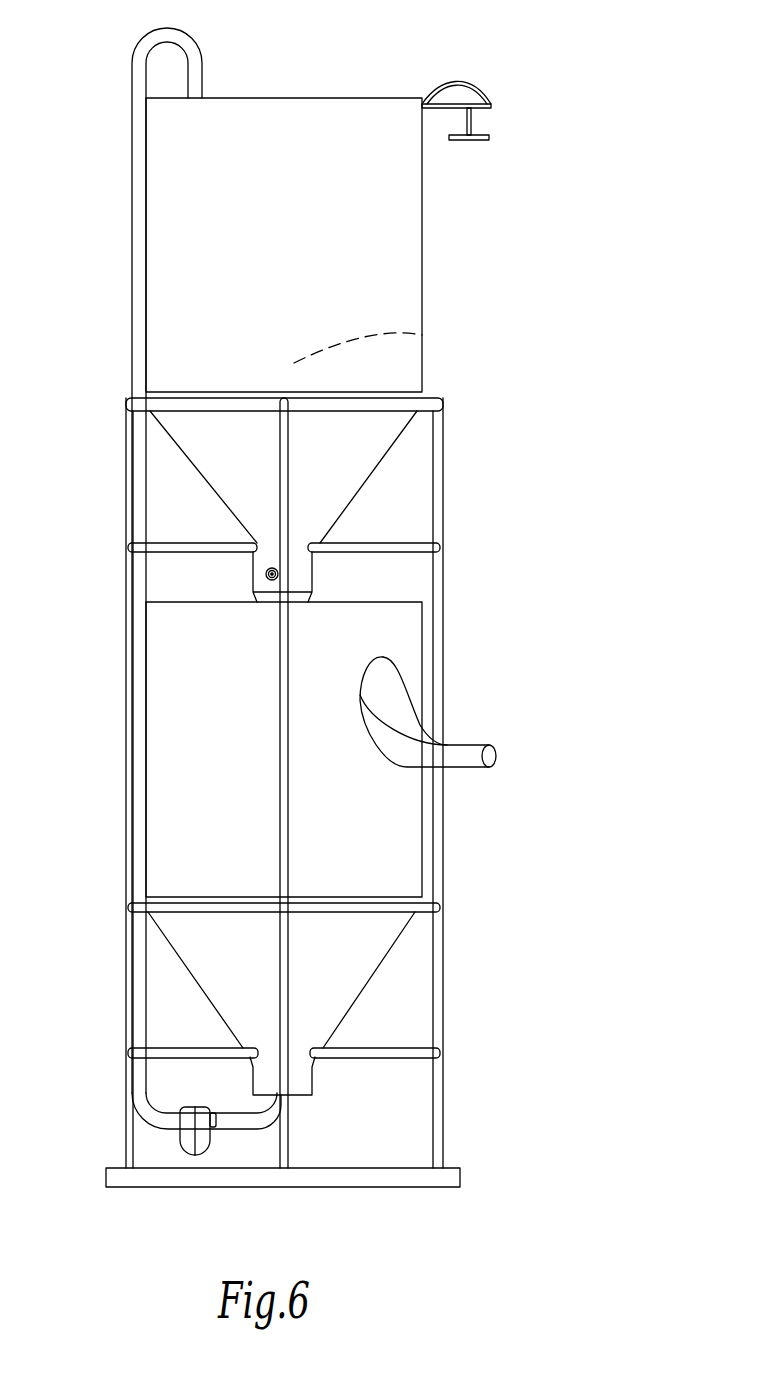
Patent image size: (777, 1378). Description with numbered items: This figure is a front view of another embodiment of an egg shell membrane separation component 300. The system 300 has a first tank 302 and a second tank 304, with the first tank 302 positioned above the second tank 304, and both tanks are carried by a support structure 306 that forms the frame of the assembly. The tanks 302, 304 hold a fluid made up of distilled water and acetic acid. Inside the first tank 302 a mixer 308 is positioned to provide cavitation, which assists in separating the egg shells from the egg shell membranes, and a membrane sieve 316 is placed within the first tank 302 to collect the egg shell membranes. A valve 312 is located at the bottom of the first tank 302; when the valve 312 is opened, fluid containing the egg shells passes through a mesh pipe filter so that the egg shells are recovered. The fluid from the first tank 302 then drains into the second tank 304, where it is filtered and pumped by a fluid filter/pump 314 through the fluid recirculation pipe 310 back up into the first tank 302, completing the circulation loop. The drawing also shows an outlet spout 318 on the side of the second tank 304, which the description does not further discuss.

The egg shell membrane separation component 300 is at (416, 42).
The first tank 302 is at (408, 246).
The second tank 304 is at (405, 622).
The support structure 306 is at (440, 470).
The mixer 308 is at (427, 337).
The fluid recirculation pipe 310 is at (140, 58).
The valve 312 is at (265, 574).
The fluid filter/pump 314 is at (183, 1133).
The membrane sieve 316 is at (480, 82).
The discharge spout 318 is at (488, 750).